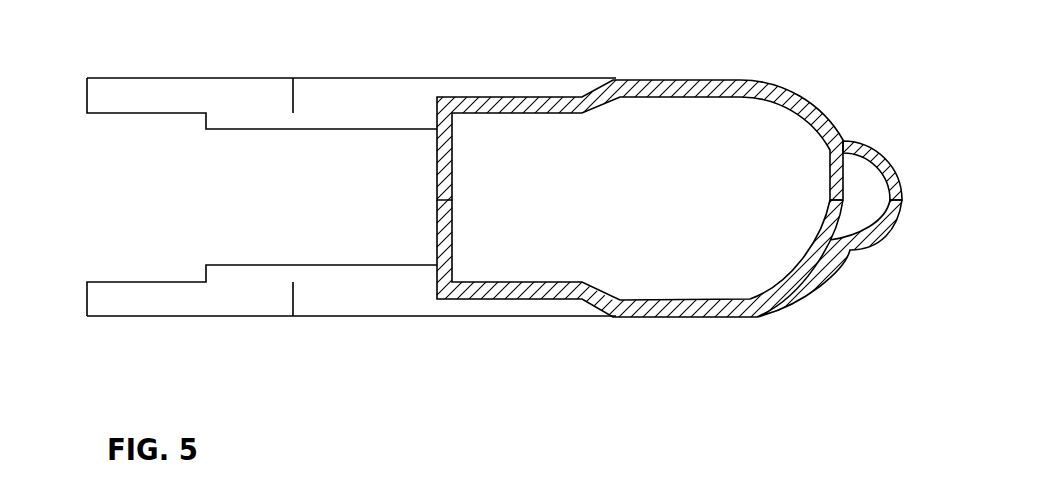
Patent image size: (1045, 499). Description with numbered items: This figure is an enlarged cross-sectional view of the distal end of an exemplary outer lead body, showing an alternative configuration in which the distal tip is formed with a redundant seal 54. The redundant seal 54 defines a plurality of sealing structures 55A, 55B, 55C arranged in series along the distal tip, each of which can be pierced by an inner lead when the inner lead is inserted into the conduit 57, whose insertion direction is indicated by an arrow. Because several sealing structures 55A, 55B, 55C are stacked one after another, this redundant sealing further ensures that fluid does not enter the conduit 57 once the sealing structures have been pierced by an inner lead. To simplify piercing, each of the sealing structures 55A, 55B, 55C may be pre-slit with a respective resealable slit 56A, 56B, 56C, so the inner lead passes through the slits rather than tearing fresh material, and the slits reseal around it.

The redundant seal 54 is at (772, 80).
The sealing structure 55A is at (452, 255).
The sealing structure 55B is at (821, 223).
The sealing structure 55C is at (881, 233).
The resealable slit 56A is at (452, 202).
The resealable slit 56B is at (830, 191).
The resealable slit 56C is at (899, 208).
The conduit 57 is at (107, 225).